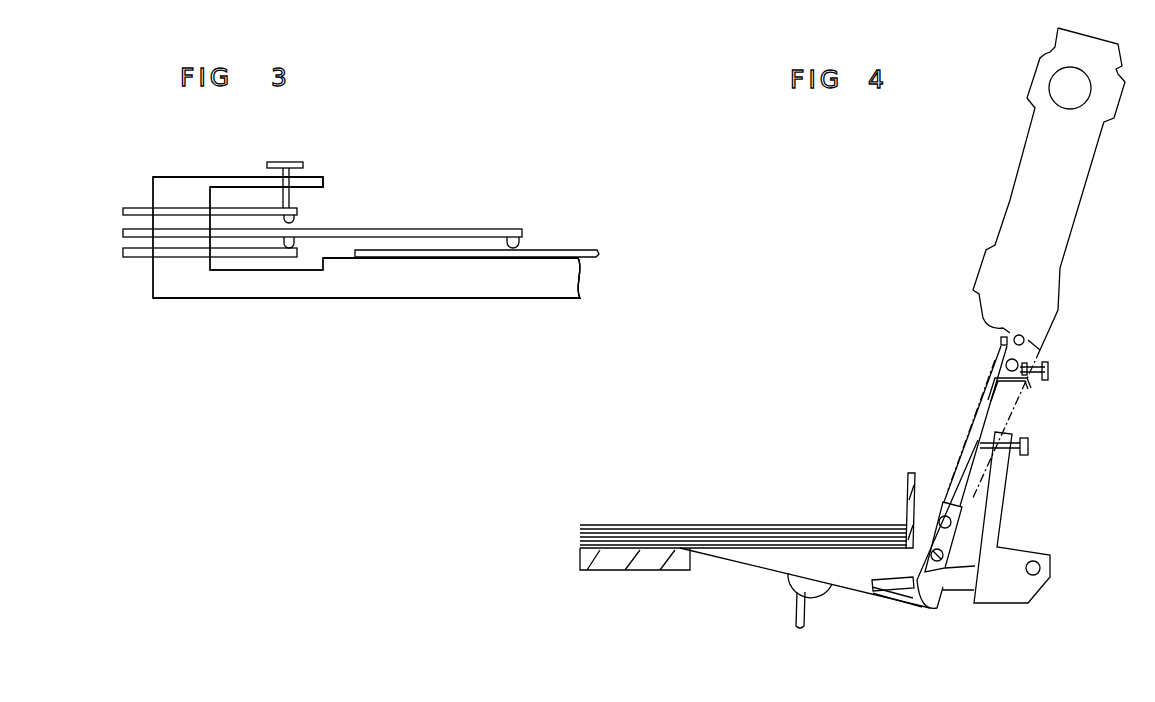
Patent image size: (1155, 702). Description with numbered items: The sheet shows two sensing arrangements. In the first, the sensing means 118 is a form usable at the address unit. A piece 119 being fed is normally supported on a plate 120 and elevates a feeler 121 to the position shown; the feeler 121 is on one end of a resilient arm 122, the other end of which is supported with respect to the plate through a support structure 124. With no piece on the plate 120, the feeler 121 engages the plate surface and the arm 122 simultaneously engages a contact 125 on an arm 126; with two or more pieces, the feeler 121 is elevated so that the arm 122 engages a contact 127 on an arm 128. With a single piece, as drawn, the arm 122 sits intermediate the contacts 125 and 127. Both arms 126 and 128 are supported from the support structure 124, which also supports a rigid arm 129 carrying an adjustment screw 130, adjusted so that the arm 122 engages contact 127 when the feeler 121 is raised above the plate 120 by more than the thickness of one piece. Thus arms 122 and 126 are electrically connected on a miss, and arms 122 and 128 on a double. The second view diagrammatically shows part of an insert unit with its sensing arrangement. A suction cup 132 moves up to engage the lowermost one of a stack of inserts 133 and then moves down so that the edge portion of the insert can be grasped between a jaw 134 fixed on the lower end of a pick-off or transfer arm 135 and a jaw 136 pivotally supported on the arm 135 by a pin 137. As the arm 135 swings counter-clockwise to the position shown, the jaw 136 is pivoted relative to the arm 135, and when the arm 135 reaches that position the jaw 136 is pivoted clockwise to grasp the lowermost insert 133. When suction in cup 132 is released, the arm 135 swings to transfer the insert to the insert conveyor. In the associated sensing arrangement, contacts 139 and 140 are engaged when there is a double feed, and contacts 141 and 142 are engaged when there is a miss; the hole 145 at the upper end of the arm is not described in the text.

In FIG. 3, the sensing means 118 is at (548, 155).
In FIG. 3, the piece 119 is at (582, 251).
In FIG. 3, the plate 120 is at (507, 285).
In FIG. 3, the feeler 121 is at (520, 243).
In FIG. 3, the resilient arm 122 is at (453, 233).
In FIG. 3, the support structure 124 is at (152, 191).
In FIG. 3, the contact 125 is at (294, 247).
In FIG. 3, the arm 126 is at (245, 253).
In FIG. 3, the contact 127 is at (294, 220).
In FIG. 3, the arm 128 is at (232, 212).
In FIG. 3, the rigid arm 129 is at (248, 182).
In FIG. 3, the adjustment screw 130 is at (290, 163).
In FIG. 4, the suction cup 132 is at (800, 574).
In FIG. 4, the stack of inserts 133 is at (743, 542).
In FIG. 4, the jaw 134 is at (906, 604).
In FIG. 4, the transfer arm 135 is at (1033, 163).
In FIG. 4, the jaw 136 is at (893, 586).
In FIG. 4, the pin 137 is at (943, 590).
In FIG. 4, the contact 139 is at (1000, 340).
In FIG. 4, the contact 140 is at (1025, 340).
In FIG. 4, the contact 141 is at (1031, 384).
In FIG. 4, the contact 142 is at (1018, 364).
In FIG. 4, the hole 145 is at (1063, 92).